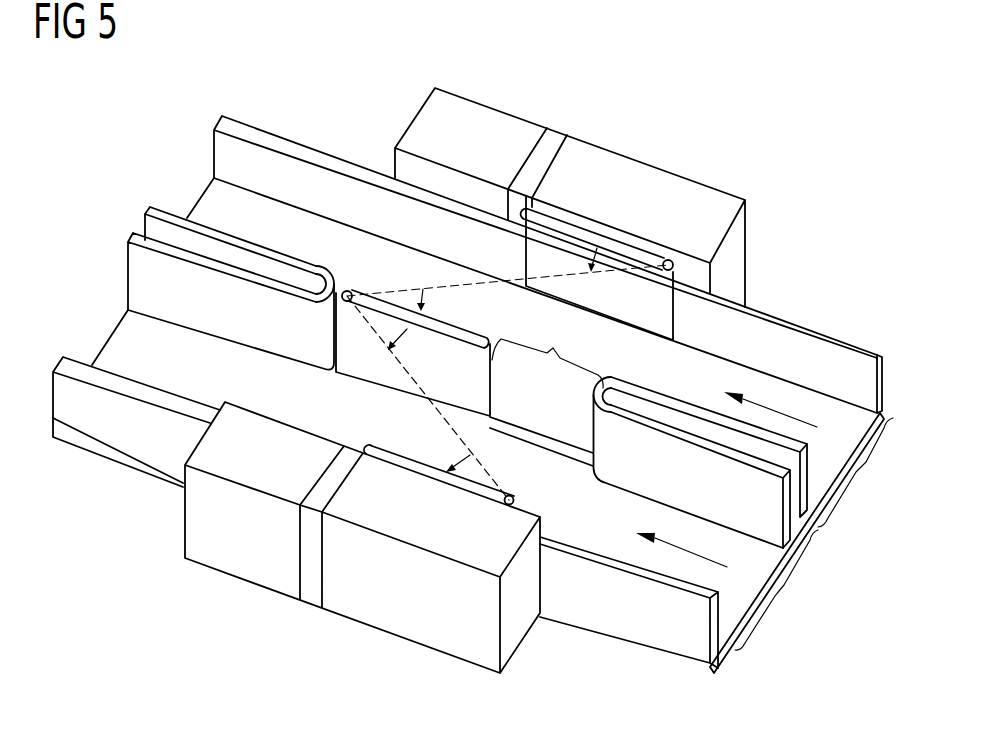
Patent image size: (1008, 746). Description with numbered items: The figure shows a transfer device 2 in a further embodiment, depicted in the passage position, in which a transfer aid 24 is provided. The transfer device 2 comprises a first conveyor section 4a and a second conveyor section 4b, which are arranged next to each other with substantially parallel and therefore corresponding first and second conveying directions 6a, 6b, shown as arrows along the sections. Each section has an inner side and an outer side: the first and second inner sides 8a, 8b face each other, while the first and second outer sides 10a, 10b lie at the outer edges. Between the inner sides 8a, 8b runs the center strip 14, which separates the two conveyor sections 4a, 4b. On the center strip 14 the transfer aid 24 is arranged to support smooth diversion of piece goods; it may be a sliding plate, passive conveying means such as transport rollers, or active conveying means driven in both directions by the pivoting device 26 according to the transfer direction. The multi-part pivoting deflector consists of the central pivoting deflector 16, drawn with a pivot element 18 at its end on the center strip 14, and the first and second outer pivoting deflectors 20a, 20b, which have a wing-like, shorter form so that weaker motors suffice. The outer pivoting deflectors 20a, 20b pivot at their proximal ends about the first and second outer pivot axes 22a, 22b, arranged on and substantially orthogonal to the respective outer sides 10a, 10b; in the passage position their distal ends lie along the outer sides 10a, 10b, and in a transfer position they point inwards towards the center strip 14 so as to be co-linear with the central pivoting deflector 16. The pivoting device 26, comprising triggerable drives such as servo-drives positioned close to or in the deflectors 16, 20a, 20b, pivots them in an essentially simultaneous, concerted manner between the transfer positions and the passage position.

The transfer device 2 is at (143, 128).
The first conveyor section 4a is at (776, 590).
The second conveyor section 4b is at (857, 472).
The first conveying direction 6a is at (655, 550).
The second conveying direction 6b is at (726, 413).
The first inner side 8a is at (127, 263).
The second inner side 8b is at (144, 216).
The first outer side 10a is at (57, 357).
The second outer side 10b is at (216, 126).
The center strip 14 is at (806, 553).
The central pivoting deflector 16 is at (357, 377).
The pin 18 is at (349, 290).
The first outer pivoting deflector 20a is at (410, 463).
The second outer pivoting deflector 20b is at (568, 260).
The first outer pivot axis 22a is at (512, 494).
The second outer pivot axis 22b is at (680, 258).
The transfer aid 24 is at (547, 353).
The pivoting device 26 is at (640, 162).